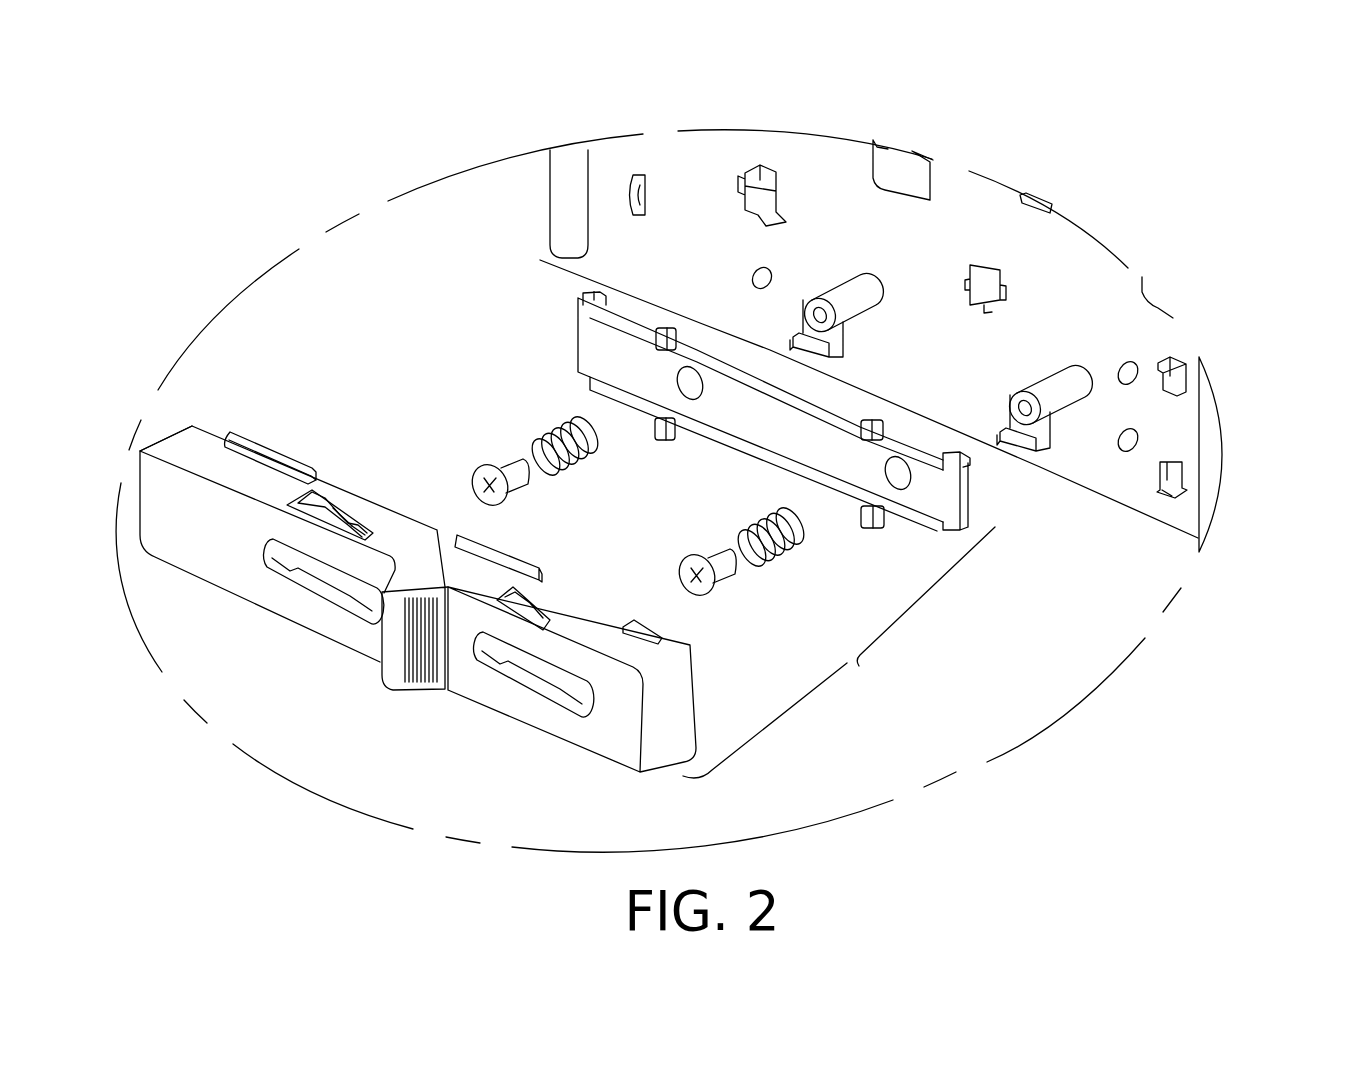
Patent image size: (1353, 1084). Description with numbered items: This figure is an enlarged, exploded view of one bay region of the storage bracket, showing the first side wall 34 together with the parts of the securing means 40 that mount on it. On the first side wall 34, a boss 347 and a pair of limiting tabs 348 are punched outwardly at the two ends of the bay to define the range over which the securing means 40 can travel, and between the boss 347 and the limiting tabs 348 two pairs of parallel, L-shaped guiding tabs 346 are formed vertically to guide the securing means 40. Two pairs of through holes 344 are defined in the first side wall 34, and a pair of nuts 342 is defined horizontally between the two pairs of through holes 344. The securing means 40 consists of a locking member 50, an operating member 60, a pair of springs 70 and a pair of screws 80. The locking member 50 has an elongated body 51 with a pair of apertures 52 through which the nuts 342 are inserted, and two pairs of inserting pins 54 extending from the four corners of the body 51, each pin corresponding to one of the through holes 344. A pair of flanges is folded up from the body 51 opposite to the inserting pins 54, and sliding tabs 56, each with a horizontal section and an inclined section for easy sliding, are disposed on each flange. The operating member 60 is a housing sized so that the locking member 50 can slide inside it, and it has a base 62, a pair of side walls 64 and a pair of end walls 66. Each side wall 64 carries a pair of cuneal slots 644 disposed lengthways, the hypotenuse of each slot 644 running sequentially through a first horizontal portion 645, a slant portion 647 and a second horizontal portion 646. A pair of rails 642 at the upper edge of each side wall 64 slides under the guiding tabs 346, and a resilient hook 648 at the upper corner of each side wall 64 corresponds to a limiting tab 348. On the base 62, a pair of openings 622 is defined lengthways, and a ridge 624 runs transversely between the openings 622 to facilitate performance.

The first side wall 34 is at (888, 332).
The nuts 342 is at (1040, 395).
The through holes 344 is at (1138, 440).
The guiding tabs 346 is at (763, 187).
The boss 347 is at (633, 180).
The limiting tabs 348 is at (1173, 497).
The securing means 40 is at (839, 652).
The locking member 50 is at (712, 413).
The body 51 is at (747, 423).
The apertures 52 is at (900, 490).
The inserting pins 54 is at (588, 288).
The sliding tabs 56 is at (666, 421).
The operating member 60 is at (472, 594).
The base 62 is at (367, 580).
The openings 622 is at (530, 693).
The ridge 624 is at (393, 670).
The side walls 64 is at (193, 437).
The rails 642 is at (246, 432).
The cuneal slots 644 is at (528, 603).
The first horizontal portion 645 is at (317, 497).
The second horizontal portion 646 is at (363, 513).
The slant portion 647 is at (343, 513).
The resilient hook 648 is at (633, 617).
The end walls 66 is at (626, 649).
The springs 70 is at (557, 421).
The screws 80 is at (486, 462).